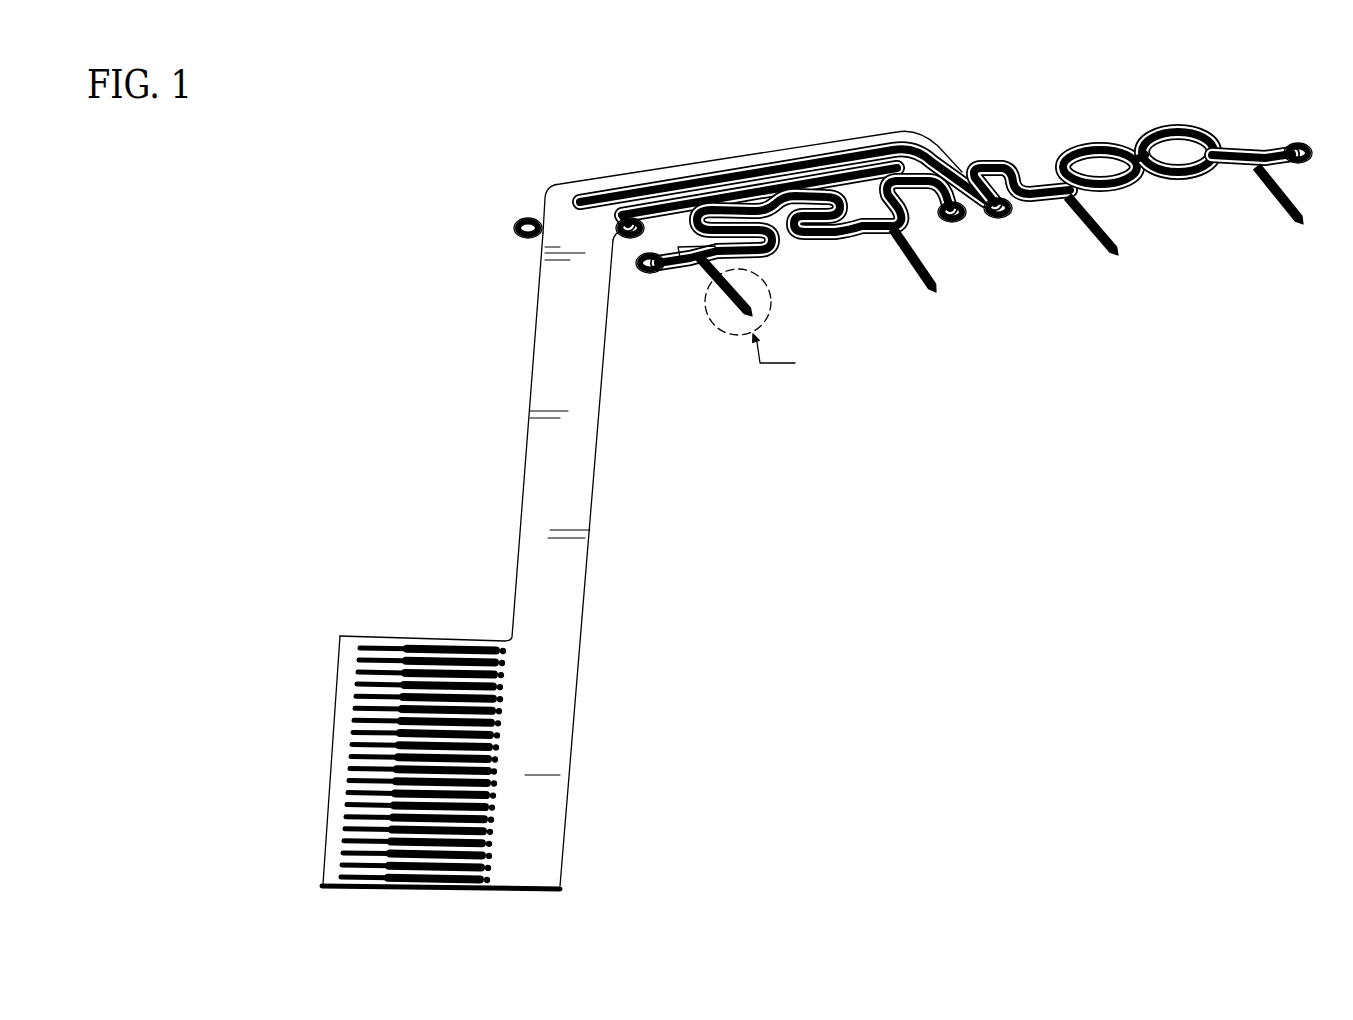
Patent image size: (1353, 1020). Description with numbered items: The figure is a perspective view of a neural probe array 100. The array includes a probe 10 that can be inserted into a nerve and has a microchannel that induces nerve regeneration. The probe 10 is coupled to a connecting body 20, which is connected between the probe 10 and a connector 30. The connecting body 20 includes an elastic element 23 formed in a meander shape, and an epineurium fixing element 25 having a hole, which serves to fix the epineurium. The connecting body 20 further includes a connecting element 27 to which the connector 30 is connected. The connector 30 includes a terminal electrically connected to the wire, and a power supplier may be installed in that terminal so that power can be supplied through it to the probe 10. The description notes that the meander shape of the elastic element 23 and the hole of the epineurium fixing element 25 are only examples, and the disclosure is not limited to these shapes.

The neural probe array 100 is at (316, 211).
The probe 10 is at (1275, 229).
The connecting body 20 is at (818, 135).
The elastic element 23 is at (828, 246).
The epineurium fixing element 25 is at (514, 225).
The connecting element 27 is at (578, 490).
The connector 30 is at (326, 686).